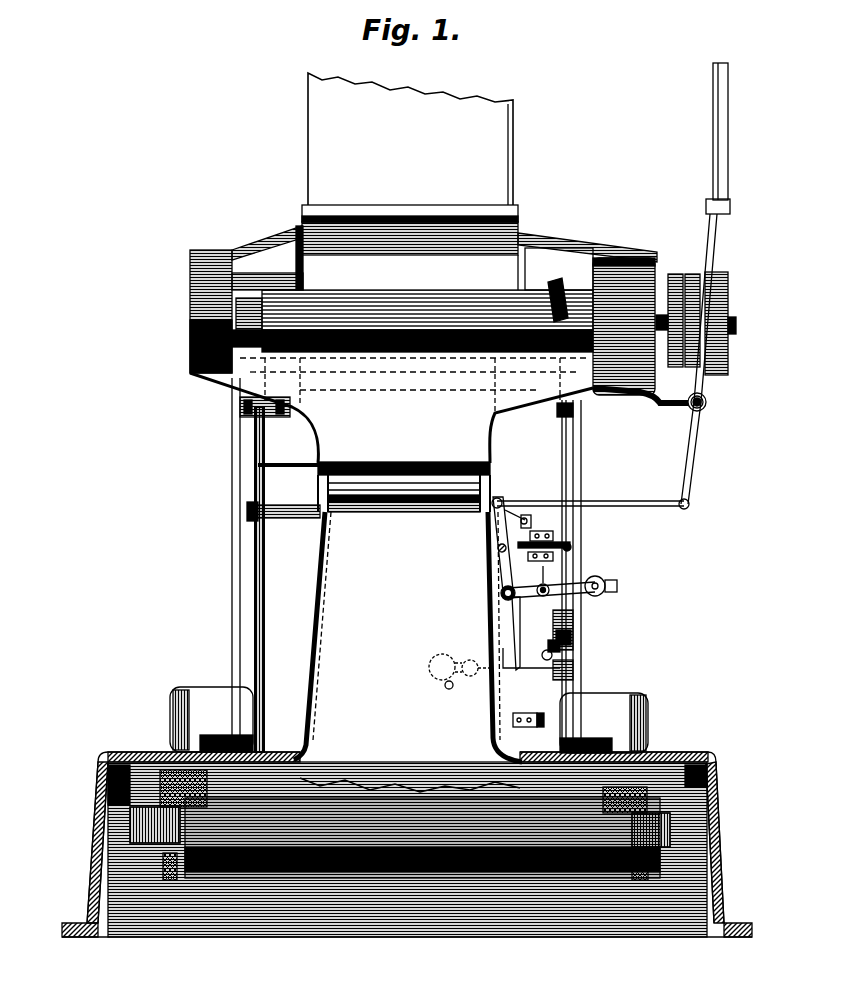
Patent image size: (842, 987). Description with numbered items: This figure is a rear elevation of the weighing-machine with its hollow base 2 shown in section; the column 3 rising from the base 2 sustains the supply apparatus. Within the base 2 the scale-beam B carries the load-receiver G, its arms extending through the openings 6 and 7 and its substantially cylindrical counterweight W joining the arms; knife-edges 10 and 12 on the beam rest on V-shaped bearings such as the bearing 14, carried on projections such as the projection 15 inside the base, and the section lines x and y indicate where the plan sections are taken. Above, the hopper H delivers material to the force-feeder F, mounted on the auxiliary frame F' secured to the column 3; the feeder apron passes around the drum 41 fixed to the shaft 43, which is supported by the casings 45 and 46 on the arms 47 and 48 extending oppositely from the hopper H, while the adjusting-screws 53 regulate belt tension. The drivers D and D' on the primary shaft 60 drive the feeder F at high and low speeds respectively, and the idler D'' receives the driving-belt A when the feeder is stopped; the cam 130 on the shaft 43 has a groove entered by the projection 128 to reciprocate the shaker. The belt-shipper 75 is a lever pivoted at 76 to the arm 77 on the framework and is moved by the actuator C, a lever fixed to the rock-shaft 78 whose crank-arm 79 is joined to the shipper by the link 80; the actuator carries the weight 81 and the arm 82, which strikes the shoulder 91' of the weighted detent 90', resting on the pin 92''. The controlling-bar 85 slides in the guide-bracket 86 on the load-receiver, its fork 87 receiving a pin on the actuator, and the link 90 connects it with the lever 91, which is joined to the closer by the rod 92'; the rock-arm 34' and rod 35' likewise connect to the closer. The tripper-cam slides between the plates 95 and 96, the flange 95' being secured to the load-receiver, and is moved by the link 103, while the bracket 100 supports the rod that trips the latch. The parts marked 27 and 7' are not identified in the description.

The chambered base 2 is at (716, 780).
The column 3 is at (408, 637).
The opening in base 6 is at (167, 880).
The opening in base 7 is at (625, 877).
The knife-edge 10 is at (97, 790).
The knife-edge 12 is at (715, 803).
The V-shaped bearing 14 is at (718, 900).
The projection 15 is at (85, 900).
The connecting rod 27 is at (250, 512).
The rock-arm 34' is at (243, 407).
The rod 35' is at (213, 565).
The drum 41 is at (313, 292).
The shaft 43 is at (192, 338).
The casing 45 is at (200, 285).
The casing 46 is at (629, 258).
The arm 47 is at (253, 250).
The arm 48 is at (578, 253).
The adjusting-screw 53 is at (540, 418).
The primary shaft 60 is at (736, 325).
The belt-shipper 75 is at (708, 395).
The pivot 76 is at (688, 407).
The arm 77 is at (628, 400).
The rock-shaft 78 is at (500, 594).
The crank-arm 79 is at (487, 533).
The link 80 is at (618, 503).
The weight 81 is at (600, 580).
The arm 82 is at (508, 617).
The controlling-bar 85 is at (575, 612).
The guide-bracket 86 is at (537, 713).
The bifurcation 87 is at (543, 580).
The link 90 is at (590, 635).
The detent 90' is at (472, 682).
The lever 91 is at (581, 649).
The shoulder 91' is at (527, 654).
The rod 92' is at (582, 670).
The pin 92'' is at (430, 679).
The plate 95 is at (516, 499).
The flange 95' is at (540, 506).
The plate 96 is at (498, 550).
The bracket 100 is at (560, 558).
The link 103 is at (567, 546).
The projection 128 is at (566, 295).
The cam 130 is at (563, 290).
The driving-belt A is at (728, 124).
The scale-beam B is at (722, 840).
The actuator C is at (495, 575).
The pulley D is at (728, 313).
The pulley D' is at (692, 308).
The idler pulley D'' is at (671, 308).
The force-feeder F is at (410, 256).
The auxiliary frame F' is at (391, 435).
The load-receiver G is at (256, 560).
The supply-hopper H is at (410, 175).
The counterweight W is at (422, 828).
The section line x x is at (243, 177).
The section line y y is at (168, 723).
The arm 7' is at (536, 642).